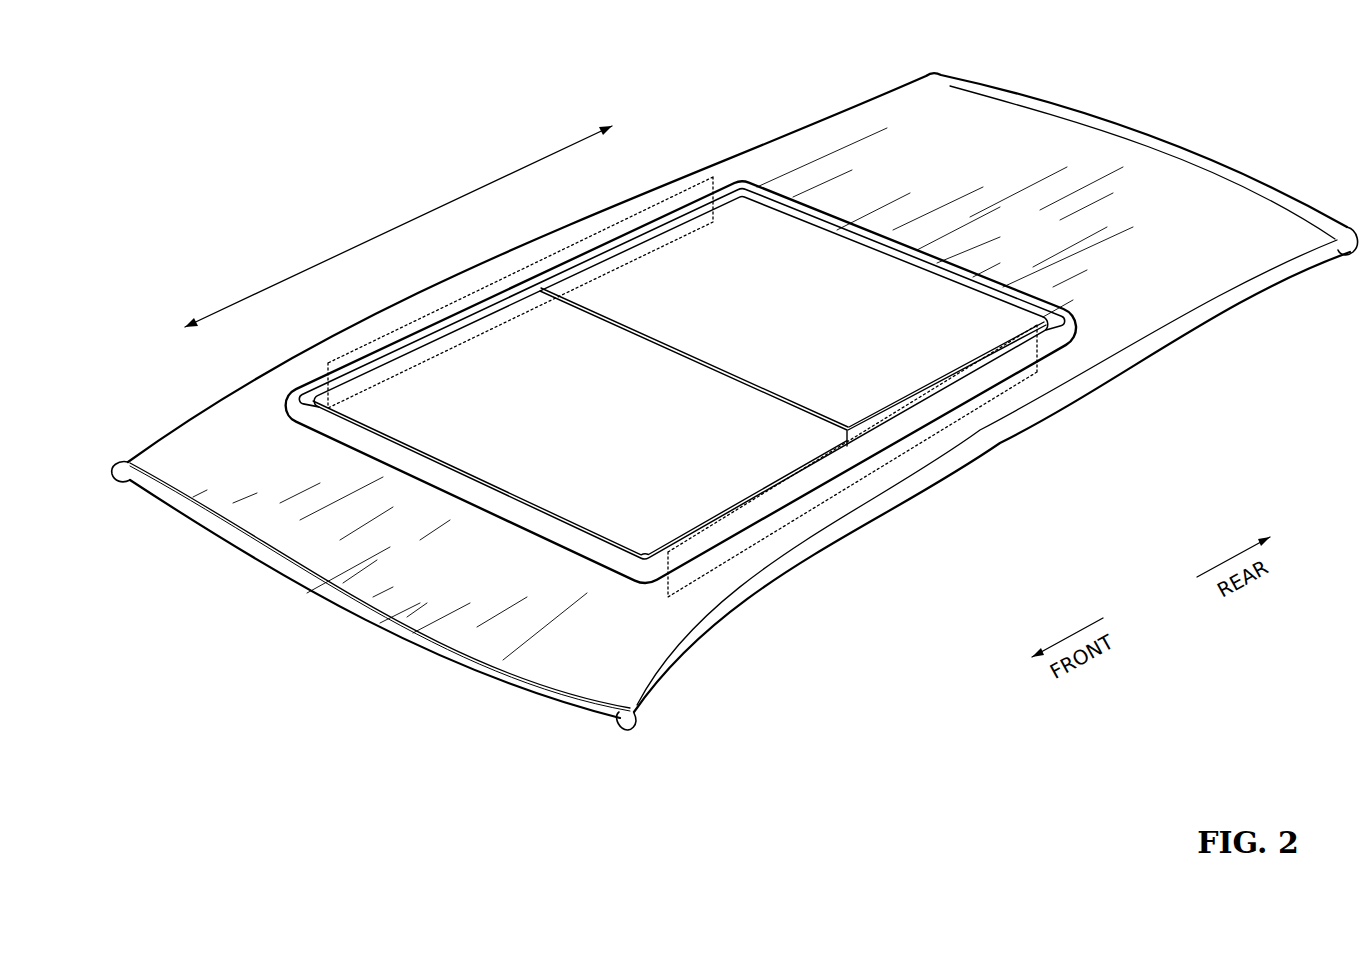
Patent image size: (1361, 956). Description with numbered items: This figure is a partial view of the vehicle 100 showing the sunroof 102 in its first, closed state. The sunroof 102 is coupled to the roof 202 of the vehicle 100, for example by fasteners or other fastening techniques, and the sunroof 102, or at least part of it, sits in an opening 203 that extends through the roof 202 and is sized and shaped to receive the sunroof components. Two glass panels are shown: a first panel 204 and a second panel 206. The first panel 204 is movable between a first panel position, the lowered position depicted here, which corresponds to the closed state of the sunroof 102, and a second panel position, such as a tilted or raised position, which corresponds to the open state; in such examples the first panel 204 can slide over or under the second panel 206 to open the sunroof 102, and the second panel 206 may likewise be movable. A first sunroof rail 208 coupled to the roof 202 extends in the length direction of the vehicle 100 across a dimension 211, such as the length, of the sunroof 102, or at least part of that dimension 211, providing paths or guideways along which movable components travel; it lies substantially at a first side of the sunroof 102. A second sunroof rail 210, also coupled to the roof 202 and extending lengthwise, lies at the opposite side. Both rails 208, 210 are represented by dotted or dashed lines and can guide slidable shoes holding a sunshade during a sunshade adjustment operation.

The vehicle 100 is at (1294, 131).
The sunroof 102 is at (681, 310).
The roof 202 is at (234, 418).
The opening 203 is at (496, 309).
The first panel 204 is at (462, 424).
The second panel 206 is at (728, 290).
The first sunroof rail 208 is at (1042, 378).
The second sunroof rail 210 is at (722, 176).
The dimension 211 is at (494, 179).